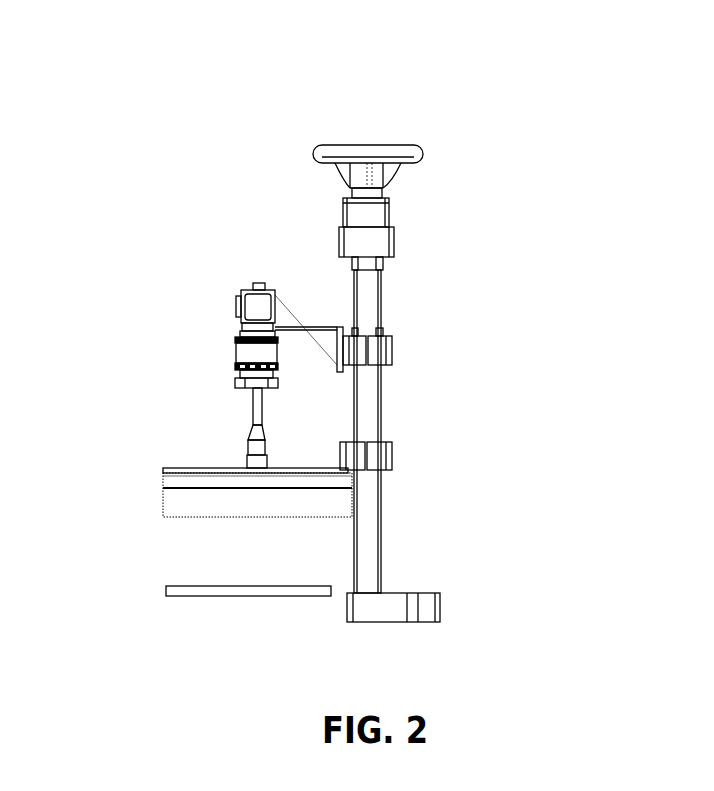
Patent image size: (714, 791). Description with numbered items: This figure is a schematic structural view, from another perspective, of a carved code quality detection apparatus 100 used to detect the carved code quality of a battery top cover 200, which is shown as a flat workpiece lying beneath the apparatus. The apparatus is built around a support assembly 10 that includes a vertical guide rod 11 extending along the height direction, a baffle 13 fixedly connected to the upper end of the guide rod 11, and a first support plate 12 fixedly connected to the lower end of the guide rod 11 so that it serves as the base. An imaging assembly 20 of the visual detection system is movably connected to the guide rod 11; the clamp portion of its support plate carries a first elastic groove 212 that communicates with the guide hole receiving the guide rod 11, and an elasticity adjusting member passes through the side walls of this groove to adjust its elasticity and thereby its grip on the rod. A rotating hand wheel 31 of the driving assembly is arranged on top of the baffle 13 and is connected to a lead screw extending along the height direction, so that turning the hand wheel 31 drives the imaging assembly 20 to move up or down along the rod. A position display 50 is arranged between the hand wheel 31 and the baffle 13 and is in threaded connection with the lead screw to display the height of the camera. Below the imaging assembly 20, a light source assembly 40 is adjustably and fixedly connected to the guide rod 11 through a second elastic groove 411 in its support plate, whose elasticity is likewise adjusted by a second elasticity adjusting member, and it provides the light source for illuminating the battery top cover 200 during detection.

The carved code quality detection apparatus 100 is at (238, 100).
The support assembly 10 is at (525, 225).
The guide rod 11 is at (370, 407).
The first support plate 12 is at (392, 595).
The baffle 13 is at (373, 242).
The imaging assembly 20 is at (245, 348).
The rotating hand wheel 31 is at (375, 152).
The light source assembly 40 is at (183, 497).
The position display 50 is at (378, 211).
The battery top cover 200 is at (266, 614).
The first elastic groove 212 is at (348, 326).
The second elastic groove 411 is at (345, 431).